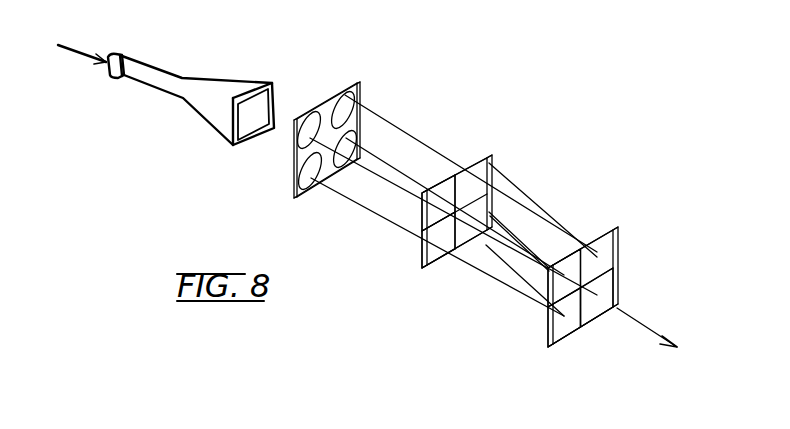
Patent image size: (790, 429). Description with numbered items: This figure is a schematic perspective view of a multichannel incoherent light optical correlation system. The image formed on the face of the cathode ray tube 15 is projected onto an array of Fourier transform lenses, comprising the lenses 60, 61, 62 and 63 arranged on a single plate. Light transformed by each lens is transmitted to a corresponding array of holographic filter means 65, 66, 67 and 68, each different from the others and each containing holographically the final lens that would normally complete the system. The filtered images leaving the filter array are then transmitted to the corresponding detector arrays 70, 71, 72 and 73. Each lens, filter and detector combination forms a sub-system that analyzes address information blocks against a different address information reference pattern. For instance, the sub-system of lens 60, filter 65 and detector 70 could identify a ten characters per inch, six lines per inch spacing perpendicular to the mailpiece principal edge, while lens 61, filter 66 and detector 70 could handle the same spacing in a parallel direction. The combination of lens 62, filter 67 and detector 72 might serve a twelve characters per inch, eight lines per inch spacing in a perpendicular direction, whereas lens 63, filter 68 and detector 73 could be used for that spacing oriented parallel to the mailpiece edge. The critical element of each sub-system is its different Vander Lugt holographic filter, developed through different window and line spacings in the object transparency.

The cathode ray tube 15 is at (237, 80).
The Fourier transform lens 60 is at (350, 103).
The Fourier transform lens 61 is at (311, 134).
The Fourier transform lens 62 is at (356, 143).
The Fourier transform lens 63 is at (312, 178).
The holographic filter means 65 is at (477, 185).
The holographic filter means 66 is at (440, 204).
The holographic filter means 67 is at (493, 210).
The holographic filter means 68 is at (442, 245).
The detector array 70 is at (607, 252).
The detector array 71 is at (558, 296).
The detector array 72 is at (607, 291).
The detector array 73 is at (575, 322).